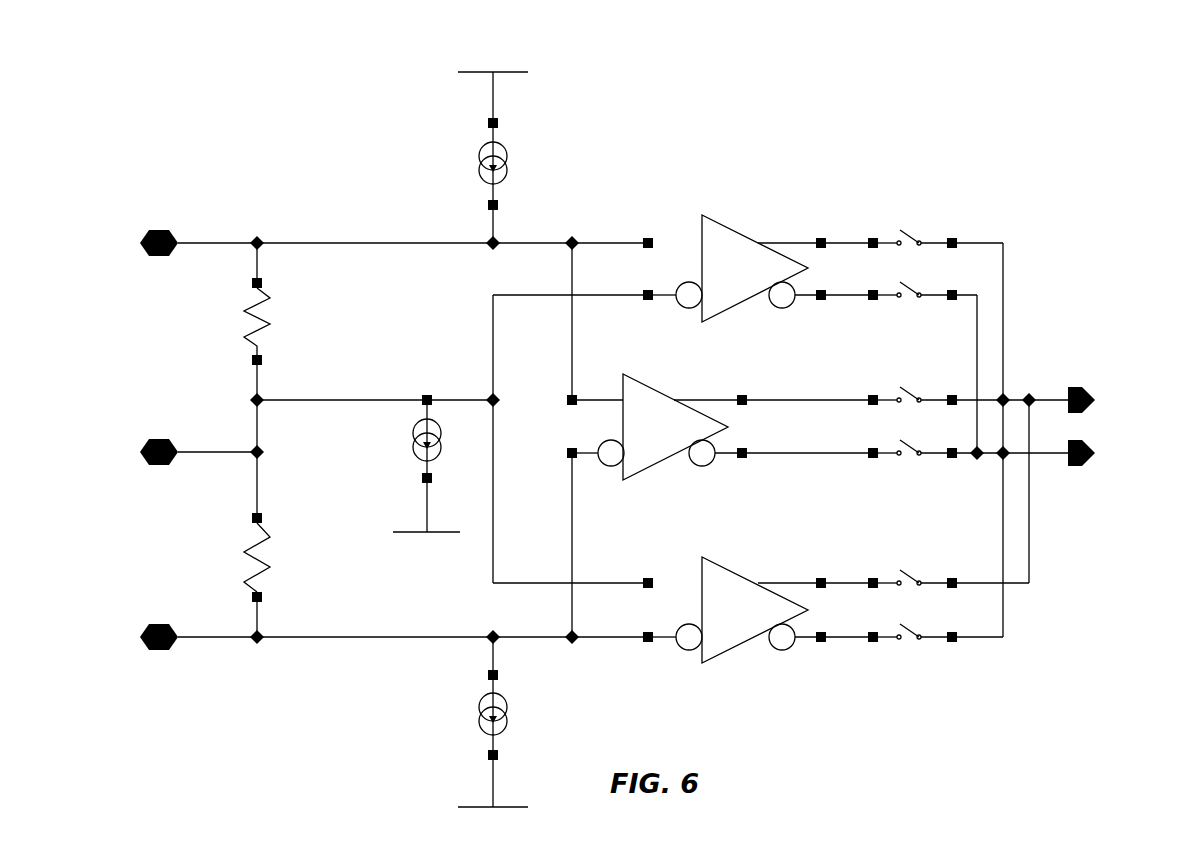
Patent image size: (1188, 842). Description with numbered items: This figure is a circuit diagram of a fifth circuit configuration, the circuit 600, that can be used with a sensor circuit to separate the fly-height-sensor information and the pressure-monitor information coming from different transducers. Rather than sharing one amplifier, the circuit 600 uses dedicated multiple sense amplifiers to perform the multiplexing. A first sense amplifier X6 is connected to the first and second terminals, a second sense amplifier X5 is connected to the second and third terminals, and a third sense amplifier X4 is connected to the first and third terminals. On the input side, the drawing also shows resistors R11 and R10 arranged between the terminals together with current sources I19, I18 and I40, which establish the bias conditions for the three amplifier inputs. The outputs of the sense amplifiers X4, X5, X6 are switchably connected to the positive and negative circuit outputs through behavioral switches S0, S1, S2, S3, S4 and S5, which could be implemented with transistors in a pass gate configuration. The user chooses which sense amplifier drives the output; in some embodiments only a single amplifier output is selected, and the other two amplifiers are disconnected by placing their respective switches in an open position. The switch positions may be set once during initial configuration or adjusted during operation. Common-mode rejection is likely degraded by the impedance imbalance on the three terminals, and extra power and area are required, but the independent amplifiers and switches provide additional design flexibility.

The circuit 600 is at (1054, 121).
The current source idc=IBias2 I19 is at (530, 164).
The current source idc=IBias1 I18 is at (530, 715).
The current source idc=IBias2-IBias1 I40 is at (364, 463).
The resistor r=R_PM R11 is at (285, 321).
The resistor r=R_FHS R10 is at (289, 557).
The second sense amplifier X5 is at (760, 245).
The third sense amplifier X4 is at (722, 408).
The first sense amplifier X6 is at (760, 591).
The behavioral switch S0 is at (944, 235).
The behavioral switch S1 is at (944, 287).
The behavioral switch S2 is at (970, 392).
The behavioral switch S3 is at (970, 444).
The behavioral switch S4 is at (951, 575).
The behavioral switch S5 is at (944, 629).